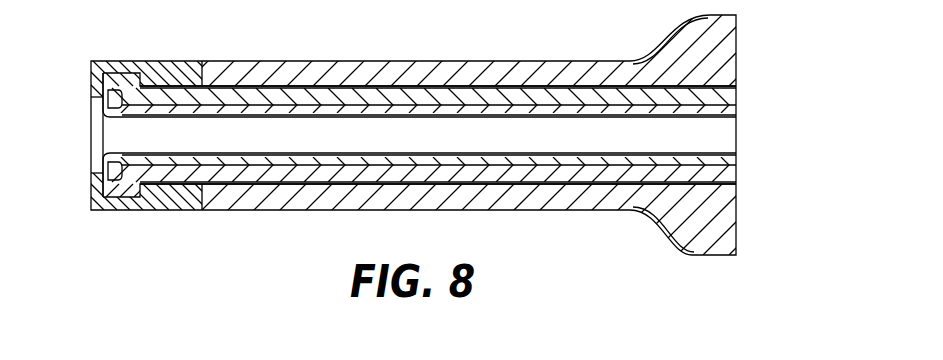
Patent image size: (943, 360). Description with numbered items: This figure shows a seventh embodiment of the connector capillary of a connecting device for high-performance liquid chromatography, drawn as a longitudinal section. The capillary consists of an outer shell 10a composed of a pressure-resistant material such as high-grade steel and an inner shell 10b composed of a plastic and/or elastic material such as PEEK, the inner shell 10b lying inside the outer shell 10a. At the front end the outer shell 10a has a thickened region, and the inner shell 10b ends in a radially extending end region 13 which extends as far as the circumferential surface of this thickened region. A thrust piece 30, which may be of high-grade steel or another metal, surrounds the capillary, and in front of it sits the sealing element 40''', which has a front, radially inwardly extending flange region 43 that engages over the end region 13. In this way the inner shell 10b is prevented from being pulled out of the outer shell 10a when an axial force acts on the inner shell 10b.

The thrust piece 30 is at (403, 60).
The sealing element 40''' is at (163, 118).
The flange region 43 is at (91, 77).
The end region 13 is at (100, 192).
The outer shell 10a is at (737, 99).
The inner shell 10b is at (734, 160).